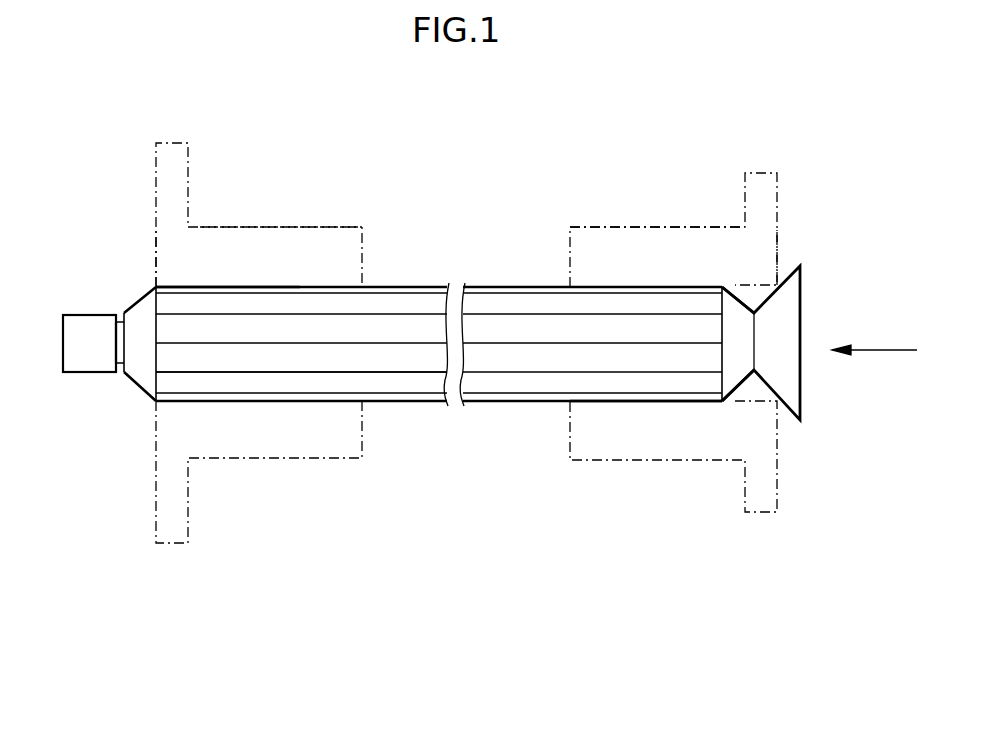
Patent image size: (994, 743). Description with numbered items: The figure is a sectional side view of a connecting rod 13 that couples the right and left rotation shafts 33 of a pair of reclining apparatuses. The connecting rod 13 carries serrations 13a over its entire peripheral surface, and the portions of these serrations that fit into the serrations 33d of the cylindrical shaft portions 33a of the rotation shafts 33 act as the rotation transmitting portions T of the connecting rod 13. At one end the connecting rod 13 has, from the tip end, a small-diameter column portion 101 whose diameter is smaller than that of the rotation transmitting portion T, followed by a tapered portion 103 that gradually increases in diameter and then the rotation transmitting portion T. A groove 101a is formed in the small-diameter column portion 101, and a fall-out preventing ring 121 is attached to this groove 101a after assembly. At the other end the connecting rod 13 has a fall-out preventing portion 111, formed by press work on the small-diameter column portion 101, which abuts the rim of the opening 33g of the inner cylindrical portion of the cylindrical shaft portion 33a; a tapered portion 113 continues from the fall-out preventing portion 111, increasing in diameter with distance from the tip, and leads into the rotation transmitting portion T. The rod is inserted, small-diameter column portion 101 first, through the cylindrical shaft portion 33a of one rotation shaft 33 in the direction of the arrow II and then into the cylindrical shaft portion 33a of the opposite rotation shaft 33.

The connecting rod 13 is at (435, 270).
The serrations 13a is at (232, 377).
The rotation shaft 33 is at (178, 142).
The cylindrical shaft portion 33a is at (240, 227).
The serrations 33d is at (207, 287).
The opening 33g is at (758, 300).
The small-diameter column portion 101 is at (83, 362).
The groove 101a is at (117, 332).
The tapered portion 103 is at (140, 377).
The fall-out preventing portion 111 is at (788, 362).
The tapered portion 113 is at (733, 380).
The fall-out preventing ring 121 is at (118, 302).
The rotation transmitting portion T is at (259, 287).
The insertion direction arrow II is at (874, 339).